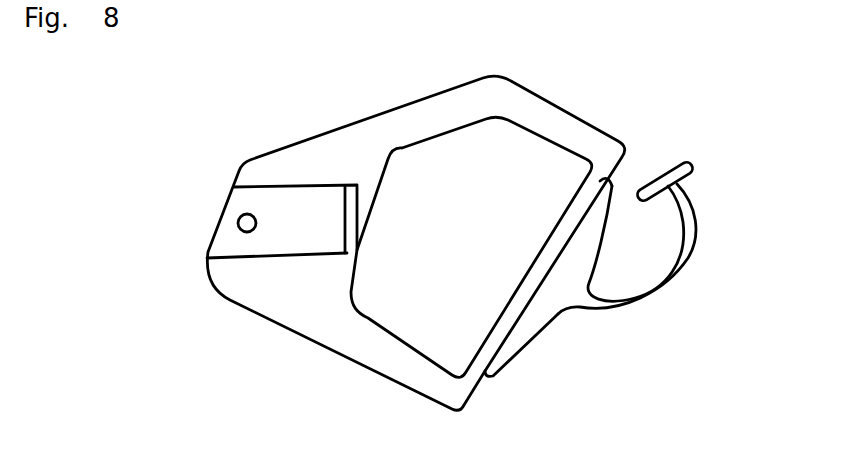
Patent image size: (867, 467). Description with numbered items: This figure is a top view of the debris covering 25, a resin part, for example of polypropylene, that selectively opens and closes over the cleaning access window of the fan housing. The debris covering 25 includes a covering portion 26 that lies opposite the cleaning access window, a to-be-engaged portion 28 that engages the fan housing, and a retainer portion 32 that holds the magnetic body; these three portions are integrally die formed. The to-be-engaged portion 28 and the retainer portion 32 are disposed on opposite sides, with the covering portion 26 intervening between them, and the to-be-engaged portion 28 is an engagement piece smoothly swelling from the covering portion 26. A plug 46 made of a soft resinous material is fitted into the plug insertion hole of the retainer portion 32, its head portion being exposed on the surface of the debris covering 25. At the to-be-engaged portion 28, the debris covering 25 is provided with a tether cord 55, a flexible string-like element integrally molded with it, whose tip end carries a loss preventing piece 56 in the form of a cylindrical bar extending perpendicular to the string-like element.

The debris covering 25 is at (604, 113).
The covering portion 26 is at (515, 157).
The to-be-engaged portion 28 is at (537, 328).
The retainer portion 32 is at (290, 203).
The plug 46 is at (238, 222).
The tether cord 55 is at (648, 303).
The loss preventing piece 56 is at (682, 170).